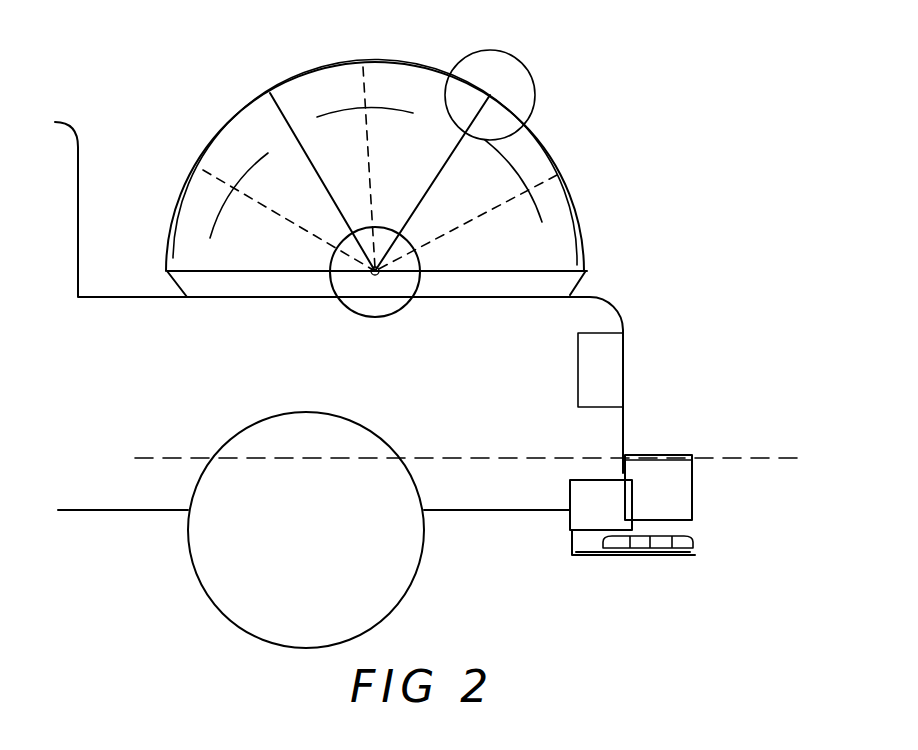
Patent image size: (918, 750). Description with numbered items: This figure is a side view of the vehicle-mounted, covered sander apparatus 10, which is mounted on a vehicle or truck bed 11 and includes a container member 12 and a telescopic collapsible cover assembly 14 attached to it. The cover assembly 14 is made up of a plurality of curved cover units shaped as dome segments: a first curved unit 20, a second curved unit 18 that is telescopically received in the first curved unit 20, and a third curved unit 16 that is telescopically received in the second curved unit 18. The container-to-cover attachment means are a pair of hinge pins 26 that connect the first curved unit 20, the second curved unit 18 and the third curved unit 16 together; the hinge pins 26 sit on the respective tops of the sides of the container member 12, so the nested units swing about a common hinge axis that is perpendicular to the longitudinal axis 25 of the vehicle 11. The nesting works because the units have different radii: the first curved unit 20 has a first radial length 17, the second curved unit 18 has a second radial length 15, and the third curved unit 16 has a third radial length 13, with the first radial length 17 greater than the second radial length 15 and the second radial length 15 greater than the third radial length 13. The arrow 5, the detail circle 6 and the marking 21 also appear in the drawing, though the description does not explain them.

The direction arrow of rotation 5 is at (421, 264).
The detail circle 6 is at (533, 77).
The vehicle-mounted, covered sander apparatus 10 is at (645, 131).
The vehicle or truck bed 11 is at (577, 448).
The container member 12 is at (558, 282).
The third radial length 13 is at (267, 210).
The telescopic collapsible cover assembly 14 is at (438, 60).
The second radial length 15 is at (367, 150).
The third curved unit 16 is at (250, 148).
The first radial length 17 is at (483, 210).
The second curved unit 18 is at (395, 133).
The first curved unit 20 is at (548, 207).
The inner rim 21 is at (342, 0).
The longitudinal axis 25 is at (757, 458).
The hinge pins 26 is at (375, 271).